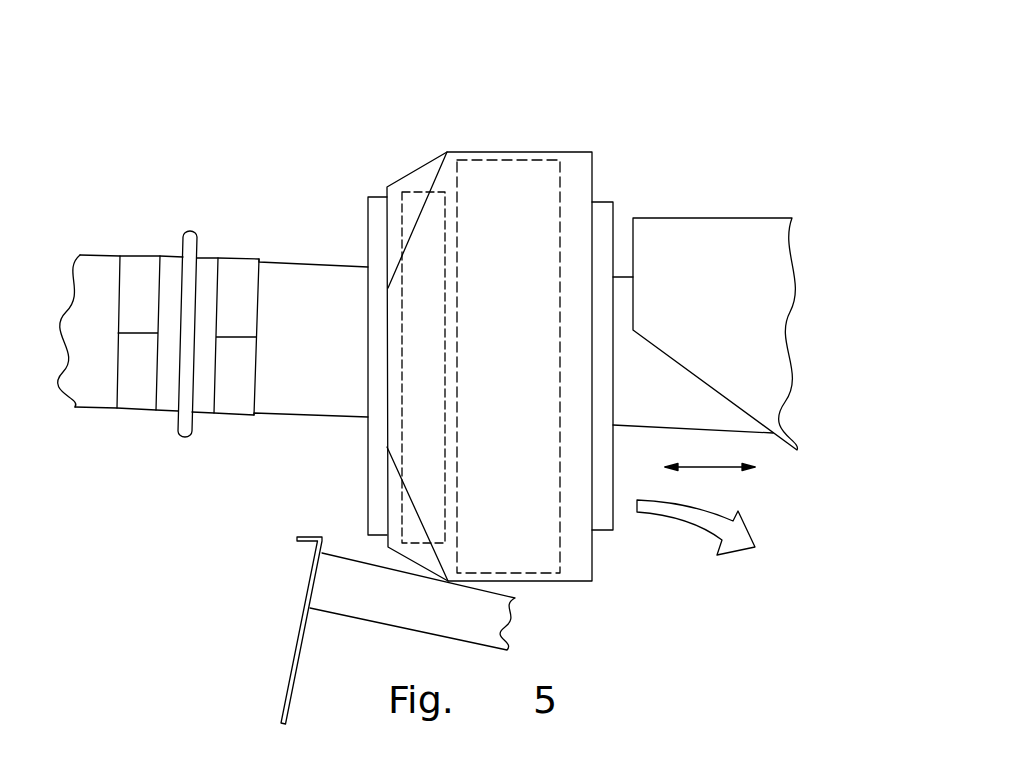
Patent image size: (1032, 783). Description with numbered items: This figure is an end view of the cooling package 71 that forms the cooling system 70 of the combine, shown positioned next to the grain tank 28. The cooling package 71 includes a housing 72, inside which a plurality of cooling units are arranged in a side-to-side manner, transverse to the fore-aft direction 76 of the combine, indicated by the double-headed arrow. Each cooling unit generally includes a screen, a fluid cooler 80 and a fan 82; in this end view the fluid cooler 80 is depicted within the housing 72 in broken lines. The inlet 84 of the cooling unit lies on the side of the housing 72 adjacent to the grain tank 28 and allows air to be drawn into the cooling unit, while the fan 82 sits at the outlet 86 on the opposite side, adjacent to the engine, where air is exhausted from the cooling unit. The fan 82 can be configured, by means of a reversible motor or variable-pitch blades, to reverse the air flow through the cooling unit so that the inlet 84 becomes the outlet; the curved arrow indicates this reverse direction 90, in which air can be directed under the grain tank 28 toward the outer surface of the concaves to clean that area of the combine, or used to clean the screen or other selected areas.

The grain tank 28 is at (757, 218).
The cooling system 70 is at (540, 308).
The cooling package 71 is at (545, 158).
The housing 72 is at (578, 583).
The fore-aft direction 76 is at (710, 467).
The fluid cooler 80 is at (455, 420).
The fan 82 is at (400, 225).
The inlet 84 is at (618, 212).
The outlet 86 is at (365, 492).
The reverse direction 90 is at (692, 525).